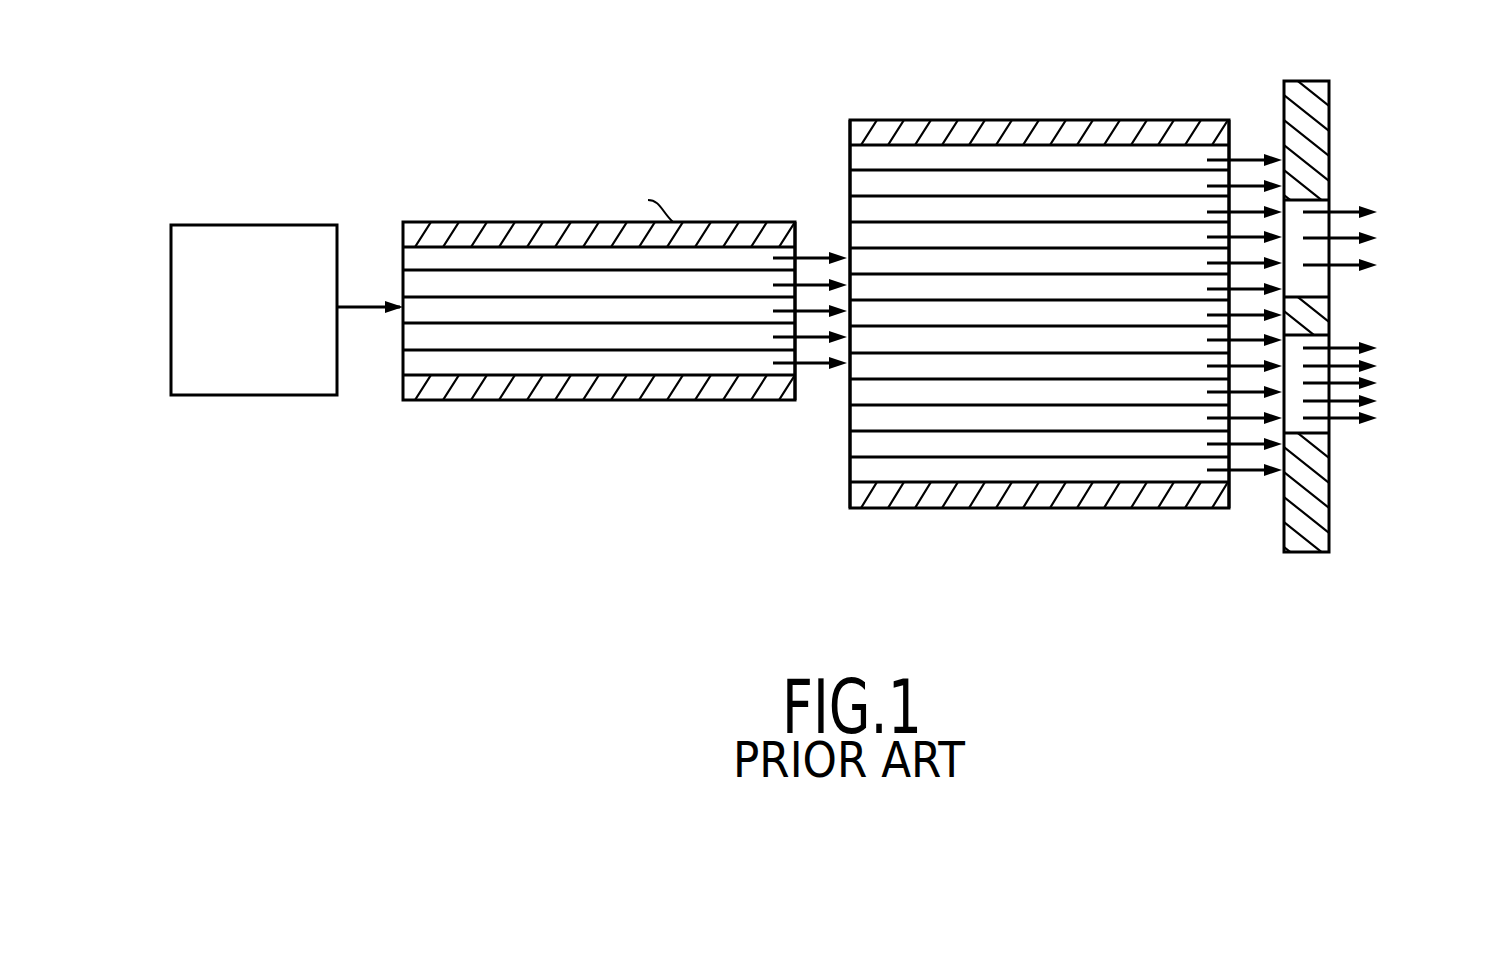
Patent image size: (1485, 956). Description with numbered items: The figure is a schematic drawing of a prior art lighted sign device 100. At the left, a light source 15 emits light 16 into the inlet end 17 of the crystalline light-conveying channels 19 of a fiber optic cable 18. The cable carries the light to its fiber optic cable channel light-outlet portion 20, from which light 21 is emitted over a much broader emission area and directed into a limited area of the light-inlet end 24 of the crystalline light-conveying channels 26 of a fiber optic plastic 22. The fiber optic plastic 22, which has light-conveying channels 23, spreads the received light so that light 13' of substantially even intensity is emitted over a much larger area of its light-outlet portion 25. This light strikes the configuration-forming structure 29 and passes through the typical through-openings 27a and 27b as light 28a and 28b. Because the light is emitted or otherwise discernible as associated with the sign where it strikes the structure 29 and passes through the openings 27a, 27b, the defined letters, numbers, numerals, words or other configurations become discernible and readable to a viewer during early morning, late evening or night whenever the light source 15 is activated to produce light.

The lighted sign device 100 is at (630, 617).
The light source 15 is at (287, 380).
The light 16 is at (368, 312).
The inlet end 17 is at (574, 311).
The fiber optic cable 18 is at (472, 400).
The crystalline light-conveying channels 19 is at (565, 338).
The fiber optic cable channel light-outlet portion 20 is at (797, 372).
The light 21 is at (813, 257).
The fiber optic plastic 22 is at (1008, 315).
The light-conveying channels 23 is at (1010, 392).
The light-inlet end 24 is at (848, 432).
The light-outlet portion 25 is at (1238, 485).
The crystalline light-conveying channels 26 is at (848, 158).
The light 13' is at (1244, 361).
The configuration-forming structure 29 is at (1336, 350).
The through-opening 27a is at (1315, 278).
The through-opening 27b is at (1322, 423).
The light 28a is at (1379, 238).
The light 28b is at (1379, 383).